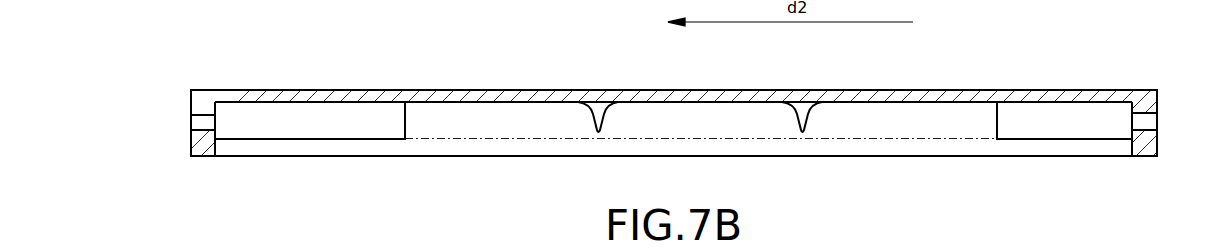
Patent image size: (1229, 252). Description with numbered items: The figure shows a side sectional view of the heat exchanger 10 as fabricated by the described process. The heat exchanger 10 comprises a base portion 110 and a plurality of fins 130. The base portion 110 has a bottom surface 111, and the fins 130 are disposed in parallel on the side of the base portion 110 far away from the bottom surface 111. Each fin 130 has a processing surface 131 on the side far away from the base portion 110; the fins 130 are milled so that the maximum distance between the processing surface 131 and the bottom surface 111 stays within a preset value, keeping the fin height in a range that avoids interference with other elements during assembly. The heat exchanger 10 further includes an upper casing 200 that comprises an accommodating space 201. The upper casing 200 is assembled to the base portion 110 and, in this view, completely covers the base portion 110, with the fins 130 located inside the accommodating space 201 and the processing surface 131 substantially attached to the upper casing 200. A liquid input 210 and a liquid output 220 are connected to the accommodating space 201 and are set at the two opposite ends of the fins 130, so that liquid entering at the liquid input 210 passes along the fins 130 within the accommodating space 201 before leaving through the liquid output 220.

The heat exchanger 10 is at (1212, 27).
The upper casing 200 is at (208, 84).
The liquid output 220 is at (190, 122).
The liquid input 210 is at (1158, 122).
The accommodating space 201 is at (290, 117).
The fins 130 is at (982, 122).
The processing surface 131 is at (662, 100).
The bottom surface 111 is at (790, 158).
The base portion 110 is at (1103, 147).